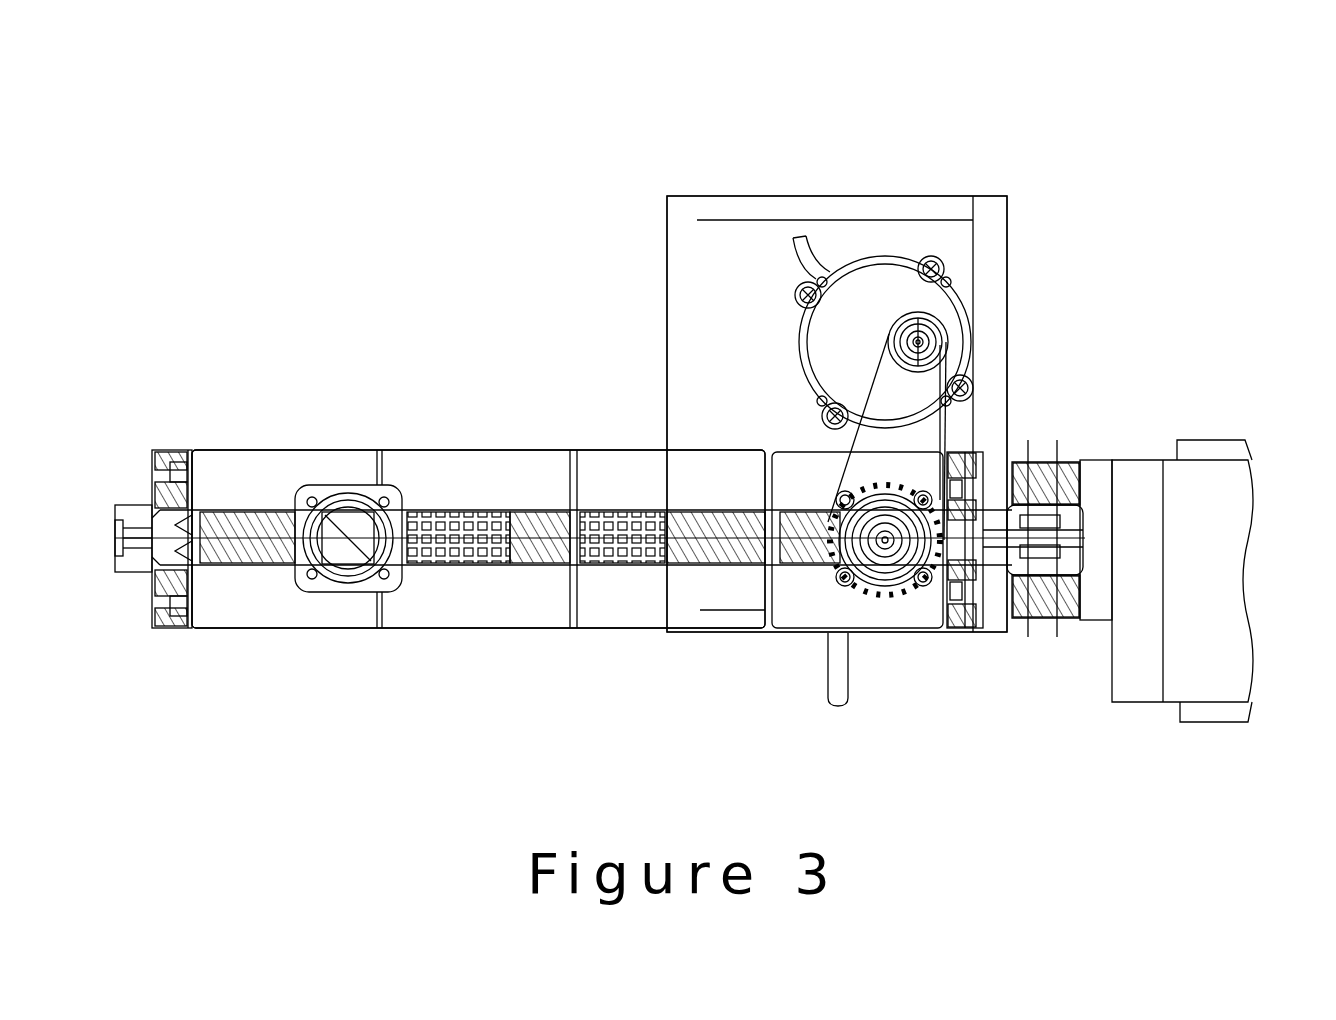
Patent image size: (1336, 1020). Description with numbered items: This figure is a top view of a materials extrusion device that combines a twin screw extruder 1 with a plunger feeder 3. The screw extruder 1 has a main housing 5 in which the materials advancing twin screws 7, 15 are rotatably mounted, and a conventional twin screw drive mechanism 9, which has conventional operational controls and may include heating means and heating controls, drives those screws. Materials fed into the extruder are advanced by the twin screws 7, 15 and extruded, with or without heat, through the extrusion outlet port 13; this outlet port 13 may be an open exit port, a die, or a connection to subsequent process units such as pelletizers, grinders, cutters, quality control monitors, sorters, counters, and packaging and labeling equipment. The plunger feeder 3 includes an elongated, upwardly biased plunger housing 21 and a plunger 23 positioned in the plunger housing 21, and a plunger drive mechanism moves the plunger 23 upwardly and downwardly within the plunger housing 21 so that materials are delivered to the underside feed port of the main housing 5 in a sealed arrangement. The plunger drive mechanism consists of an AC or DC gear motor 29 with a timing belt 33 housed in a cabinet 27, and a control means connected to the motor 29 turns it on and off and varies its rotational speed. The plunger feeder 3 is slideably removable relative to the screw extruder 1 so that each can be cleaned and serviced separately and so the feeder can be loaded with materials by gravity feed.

The twin screw extruder 1 is at (338, 410).
The plunger feeder 3 is at (1030, 301).
The main housing 5 is at (622, 450).
The materials advancing twin screw 7 is at (522, 560).
The twin screw drive mechanism 9 is at (1147, 461).
The extrusion outlet port 13 is at (117, 507).
The materials advancing twin screw 15 is at (522, 560).
The plunger housing 21 is at (838, 515).
The plunger 23 is at (887, 543).
The cabinet 27 is at (1009, 250).
The gear motor 29 is at (869, 256).
The timing belt 33 is at (951, 431).